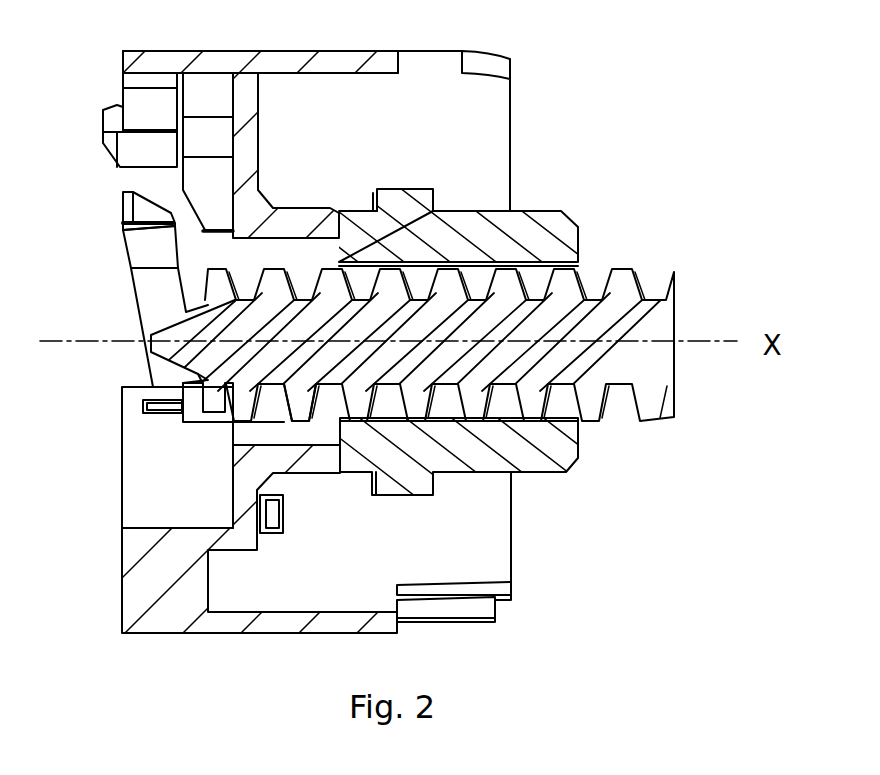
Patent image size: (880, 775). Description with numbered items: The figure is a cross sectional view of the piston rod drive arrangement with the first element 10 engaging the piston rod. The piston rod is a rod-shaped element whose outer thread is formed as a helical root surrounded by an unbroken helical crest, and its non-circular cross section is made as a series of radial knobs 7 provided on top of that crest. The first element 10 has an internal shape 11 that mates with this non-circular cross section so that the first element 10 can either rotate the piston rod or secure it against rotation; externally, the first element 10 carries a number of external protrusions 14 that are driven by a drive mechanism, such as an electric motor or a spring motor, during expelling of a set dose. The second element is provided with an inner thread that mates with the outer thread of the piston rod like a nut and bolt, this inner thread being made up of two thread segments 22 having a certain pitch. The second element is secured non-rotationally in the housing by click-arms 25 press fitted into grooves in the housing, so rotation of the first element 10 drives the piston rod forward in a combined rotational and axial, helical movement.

The radial knob 7 is at (638, 275).
The first element 10 is at (558, 230).
The internal shape 11 is at (580, 421).
The external protrusion 14 is at (423, 198).
The thread segment 22 is at (293, 400).
The click-arm 25 is at (460, 608).